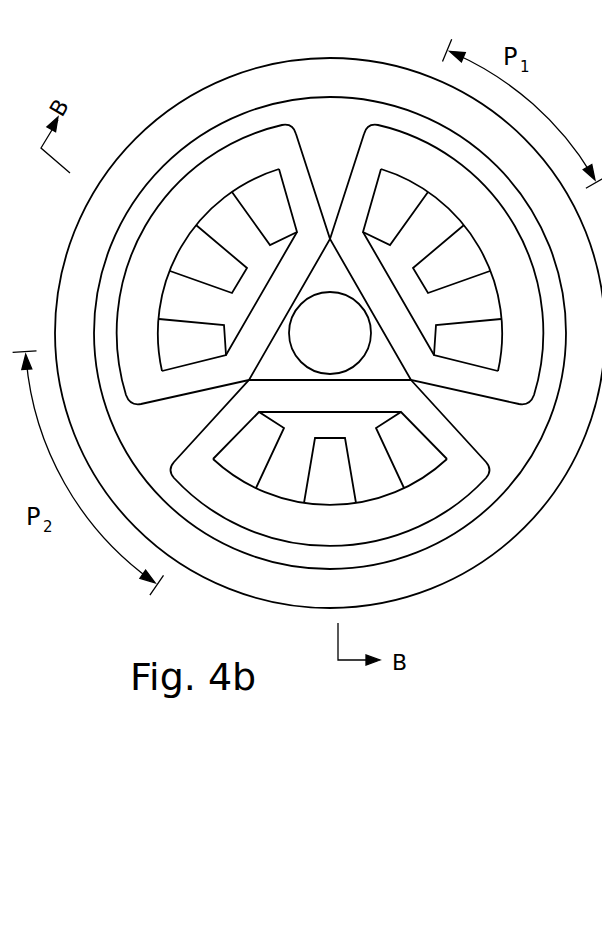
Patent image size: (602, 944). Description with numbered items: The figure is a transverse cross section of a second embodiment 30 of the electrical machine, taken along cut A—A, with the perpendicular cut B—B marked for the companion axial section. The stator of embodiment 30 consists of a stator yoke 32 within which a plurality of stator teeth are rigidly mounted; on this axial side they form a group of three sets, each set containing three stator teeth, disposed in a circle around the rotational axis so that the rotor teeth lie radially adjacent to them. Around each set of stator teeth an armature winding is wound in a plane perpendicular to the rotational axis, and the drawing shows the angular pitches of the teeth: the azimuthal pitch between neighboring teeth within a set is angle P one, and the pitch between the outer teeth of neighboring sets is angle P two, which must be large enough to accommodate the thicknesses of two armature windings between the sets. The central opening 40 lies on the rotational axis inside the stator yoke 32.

The electrical machine embodiment 30 is at (165, 68).
The stator yoke 32 is at (352, 88).
The central bore 40 is at (347, 345).